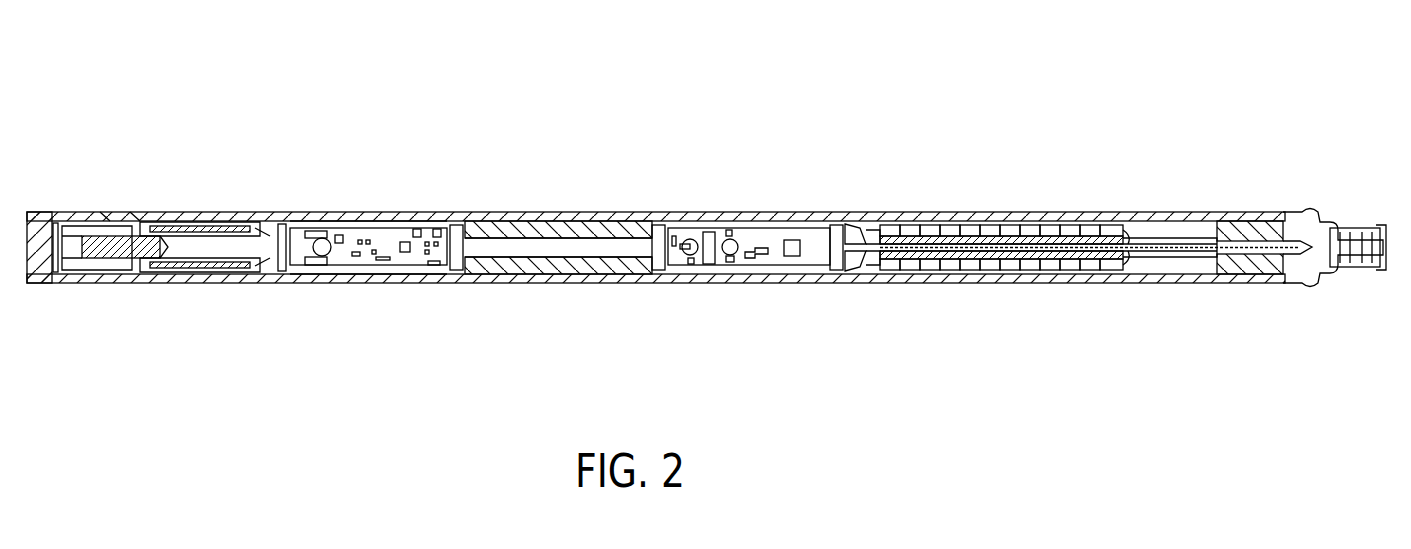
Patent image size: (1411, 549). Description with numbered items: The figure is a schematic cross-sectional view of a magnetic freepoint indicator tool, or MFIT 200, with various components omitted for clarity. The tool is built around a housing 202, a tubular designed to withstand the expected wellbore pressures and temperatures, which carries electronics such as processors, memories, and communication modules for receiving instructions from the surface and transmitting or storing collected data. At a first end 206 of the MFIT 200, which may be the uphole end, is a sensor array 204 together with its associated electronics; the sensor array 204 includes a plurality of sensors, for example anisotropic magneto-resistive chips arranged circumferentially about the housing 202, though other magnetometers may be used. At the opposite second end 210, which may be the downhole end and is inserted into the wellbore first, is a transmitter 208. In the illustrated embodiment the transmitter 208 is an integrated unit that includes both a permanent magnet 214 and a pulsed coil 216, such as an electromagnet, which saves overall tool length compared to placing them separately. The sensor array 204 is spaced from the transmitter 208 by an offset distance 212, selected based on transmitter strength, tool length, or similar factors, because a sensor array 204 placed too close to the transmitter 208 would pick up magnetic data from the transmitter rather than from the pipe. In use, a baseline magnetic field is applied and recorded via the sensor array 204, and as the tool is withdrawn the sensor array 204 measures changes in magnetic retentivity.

The magnetic freepoint indicator tool (MFIT) 200 is at (1094, 67).
The housing 202 is at (118, 218).
The sensor array 204 is at (209, 310).
The first end 206 is at (66, 328).
The transmitter 208 is at (1090, 254).
The second end 210 is at (1222, 141).
The offset distance 212 is at (857, 337).
The permanent magnet 214 is at (1005, 268).
The pulsed coil 216 is at (923, 293).